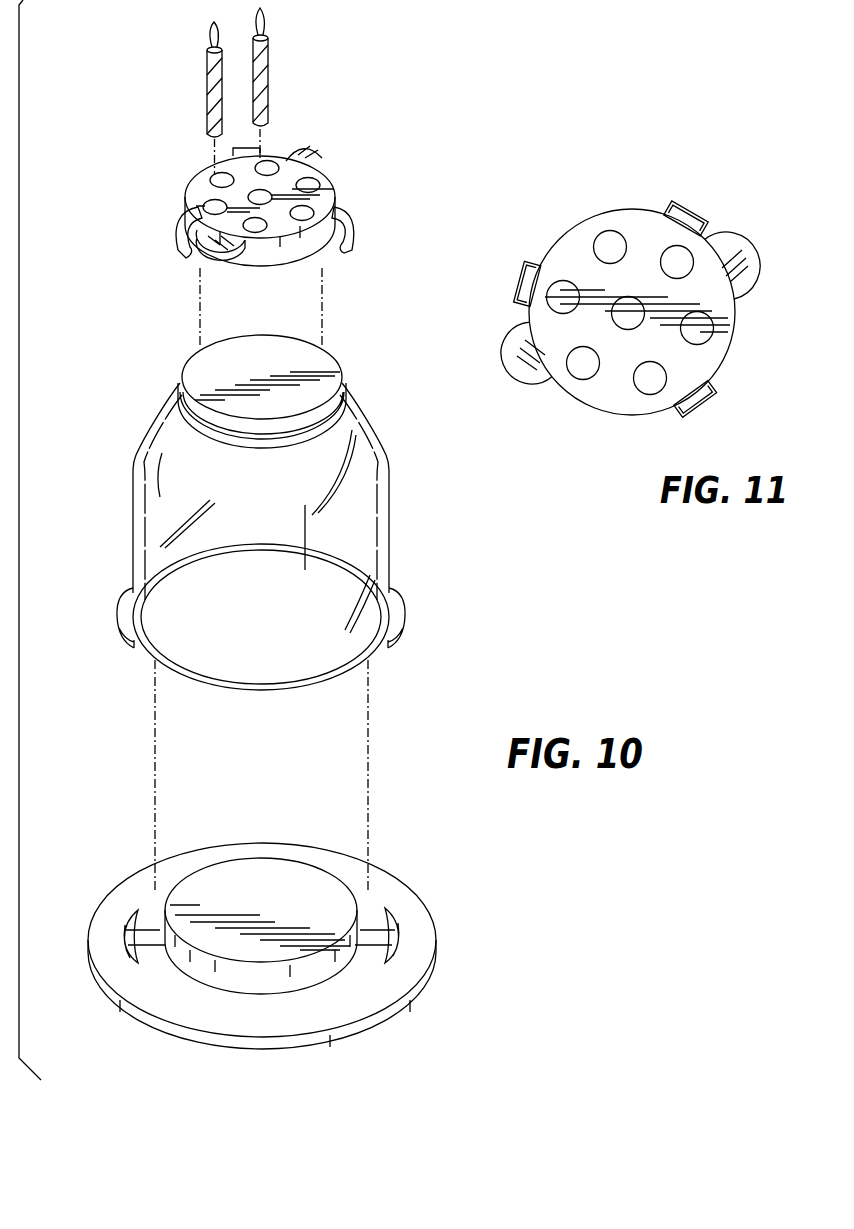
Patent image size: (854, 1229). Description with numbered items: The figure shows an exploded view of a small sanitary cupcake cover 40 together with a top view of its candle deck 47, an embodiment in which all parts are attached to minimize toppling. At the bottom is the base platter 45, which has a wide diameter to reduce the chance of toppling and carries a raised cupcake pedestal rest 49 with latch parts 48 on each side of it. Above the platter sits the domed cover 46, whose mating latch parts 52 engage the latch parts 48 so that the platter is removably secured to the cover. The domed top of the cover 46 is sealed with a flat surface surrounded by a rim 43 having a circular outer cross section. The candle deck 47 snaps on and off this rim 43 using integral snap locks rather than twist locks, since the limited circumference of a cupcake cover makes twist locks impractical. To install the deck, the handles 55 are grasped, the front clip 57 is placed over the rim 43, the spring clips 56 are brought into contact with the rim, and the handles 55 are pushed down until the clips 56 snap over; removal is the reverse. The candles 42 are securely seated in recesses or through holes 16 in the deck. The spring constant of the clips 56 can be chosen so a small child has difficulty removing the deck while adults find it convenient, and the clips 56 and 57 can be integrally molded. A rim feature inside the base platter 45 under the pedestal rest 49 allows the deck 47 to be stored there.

In FIG. 10, the holes 16 is at (200, 194).
In FIG. 11, the holes 16 is at (609, 247).
In FIG. 10, the sanitary cupcake cover 40 is at (238, 152).
In FIG. 11, the sanitary cupcake cover 40 is at (442, 162).
In FIG. 10, the candle 42 is at (270, 77).
In FIG. 10, the rim 43 is at (335, 374).
In FIG. 10, the base platter 45 is at (402, 1020).
In FIG. 10, the cover 46 is at (386, 472).
In FIG. 10, the candle deck 47 is at (285, 122).
In FIG. 11, the candle deck 47 is at (643, 172).
In FIG. 10, the latch parts 48 is at (405, 920).
In FIG. 10, the raised cupcake pedestal rest 49 is at (250, 882).
In FIG. 10, the mating latch parts 52 is at (405, 616).
In FIG. 10, the handles 55 is at (313, 150).
In FIG. 11, the handles 55 is at (742, 248).
In FIG. 10, the spring clips 56 is at (352, 232).
In FIG. 11, the spring clips 56 is at (688, 206).
In FIG. 10, the front clip 57 is at (178, 228).
In FIG. 11, the front clip 57 is at (515, 284).